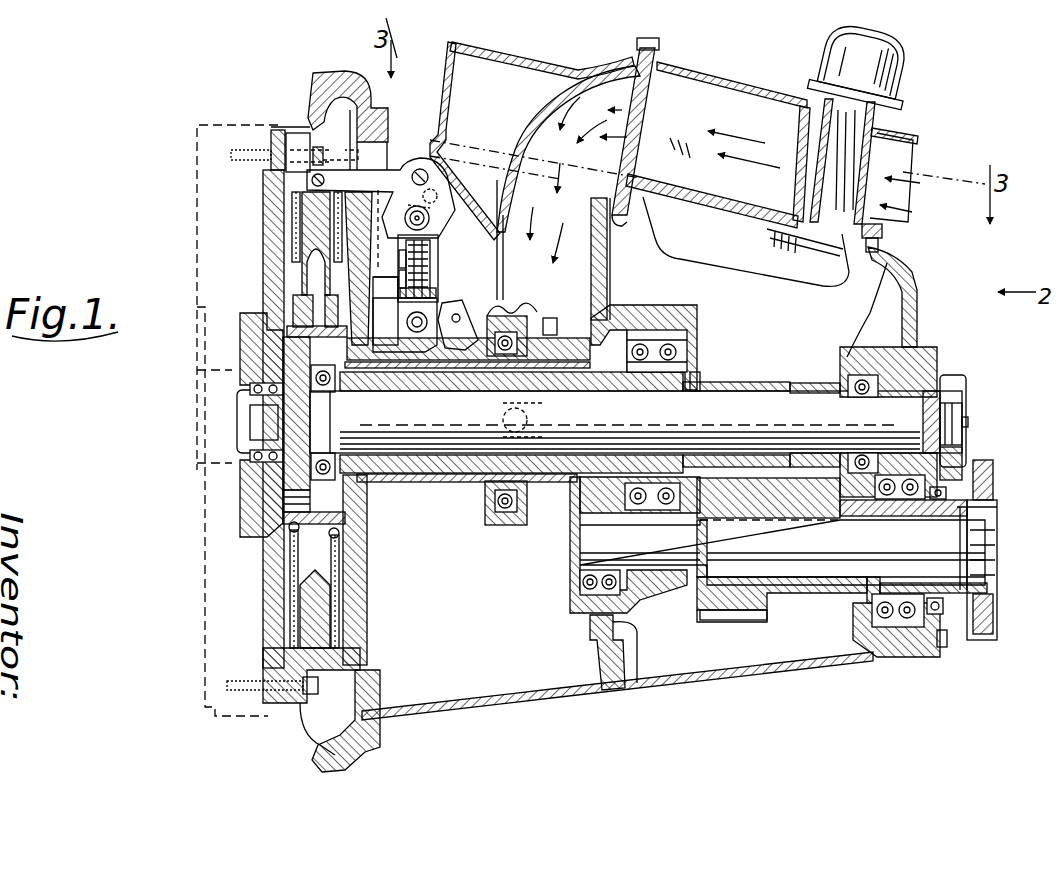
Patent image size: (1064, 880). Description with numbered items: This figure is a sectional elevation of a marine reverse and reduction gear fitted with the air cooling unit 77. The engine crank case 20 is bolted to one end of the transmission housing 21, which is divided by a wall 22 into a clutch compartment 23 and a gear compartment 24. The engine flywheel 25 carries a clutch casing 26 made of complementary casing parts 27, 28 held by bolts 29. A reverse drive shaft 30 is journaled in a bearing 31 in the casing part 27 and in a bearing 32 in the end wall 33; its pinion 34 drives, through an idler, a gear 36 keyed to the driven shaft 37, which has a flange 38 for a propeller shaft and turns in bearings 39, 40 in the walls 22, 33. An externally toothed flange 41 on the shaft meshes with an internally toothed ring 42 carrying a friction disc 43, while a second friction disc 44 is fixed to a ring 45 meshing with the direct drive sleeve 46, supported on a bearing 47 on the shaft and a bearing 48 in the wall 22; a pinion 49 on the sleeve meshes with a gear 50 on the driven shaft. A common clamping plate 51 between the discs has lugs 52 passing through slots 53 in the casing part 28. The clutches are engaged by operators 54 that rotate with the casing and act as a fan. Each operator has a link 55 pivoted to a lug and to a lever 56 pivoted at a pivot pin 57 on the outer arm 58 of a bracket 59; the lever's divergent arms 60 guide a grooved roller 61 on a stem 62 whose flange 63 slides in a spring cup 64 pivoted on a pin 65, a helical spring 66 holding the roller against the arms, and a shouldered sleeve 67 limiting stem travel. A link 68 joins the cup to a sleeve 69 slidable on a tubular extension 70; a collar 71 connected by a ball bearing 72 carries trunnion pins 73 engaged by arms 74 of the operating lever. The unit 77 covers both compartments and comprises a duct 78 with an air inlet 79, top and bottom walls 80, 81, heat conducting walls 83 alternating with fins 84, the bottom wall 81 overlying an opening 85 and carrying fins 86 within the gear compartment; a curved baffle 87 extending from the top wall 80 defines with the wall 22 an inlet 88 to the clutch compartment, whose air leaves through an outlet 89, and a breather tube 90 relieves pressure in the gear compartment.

The crank case 20 is at (345, 72).
The transmission housing 21 is at (490, 710).
The wall 22 is at (588, 647).
The clutch compartment 23 is at (478, 660).
The gear compartment 24 is at (705, 659).
The engine flywheel 25 is at (197, 167).
The clutch casing 26 is at (279, 124).
The casing part 27 is at (277, 707).
The casing part 28 is at (293, 707).
The bolts 29 is at (311, 695).
The reverse drive shaft 30 is at (466, 419).
The bearing 31 is at (255, 458).
The bearing 32 is at (873, 373).
The end wall 33 is at (918, 293).
The pinion 34 is at (800, 383).
The gear 36 is at (820, 603).
The driven shaft 37 is at (858, 549).
The flange 38 is at (983, 460).
The bearing 39 is at (575, 598).
The bearing 40 is at (912, 625).
The externally toothed flange 41 is at (290, 360).
The internally toothed ring 42 is at (290, 308).
The friction disc 43 is at (275, 290).
The friction disc 44 is at (300, 292).
The internally toothed ring 45 is at (383, 311).
The direct drive sleeve 46 is at (468, 344).
The bearing 47 is at (338, 402).
The bearing 48 is at (678, 314).
The pinion 49 is at (710, 372).
The gear 50 is at (727, 618).
The clamping plate 51 is at (263, 222).
The lugs 52 is at (358, 172).
The slots 53 is at (300, 186).
The operators 54 is at (440, 257).
The link 55 is at (393, 175).
The lever 56 is at (430, 180).
The pivot pin 57 is at (440, 196).
The outer arm 58 is at (432, 209).
The bracket 59 is at (385, 299).
The divergent arms 60 is at (445, 228).
The roller 61 is at (430, 234).
The stem 62 is at (436, 282).
The flange 63 is at (392, 256).
The spring cup 64 is at (434, 295).
The pin 65 is at (392, 275).
The helical spring 66 is at (436, 268).
The shouldered sleeve 67 is at (463, 319).
The link 68 is at (413, 330).
The sleeve 69 is at (430, 326).
The tubular extension 70 is at (440, 485).
The collar 71 is at (512, 318).
The ball bearing 72 is at (492, 527).
The trunnion pins 73 is at (528, 419).
The arms 74 is at (545, 405).
The air cooling unit 77 is at (717, 66).
The duct 78 is at (712, 107).
The air inlet 79 is at (893, 160).
The top wall 80 is at (772, 107).
The bottom wall 81 is at (790, 213).
The heat conducting walls 83 is at (824, 104).
The heat conducting fins 84 is at (785, 172).
The opening 85 is at (655, 212).
The heat conducting fins 86 is at (700, 252).
The baffle 87 is at (505, 186).
The inlet 88 is at (570, 215).
The outlet 89 is at (490, 112).
The breather tube 90 is at (878, 120).